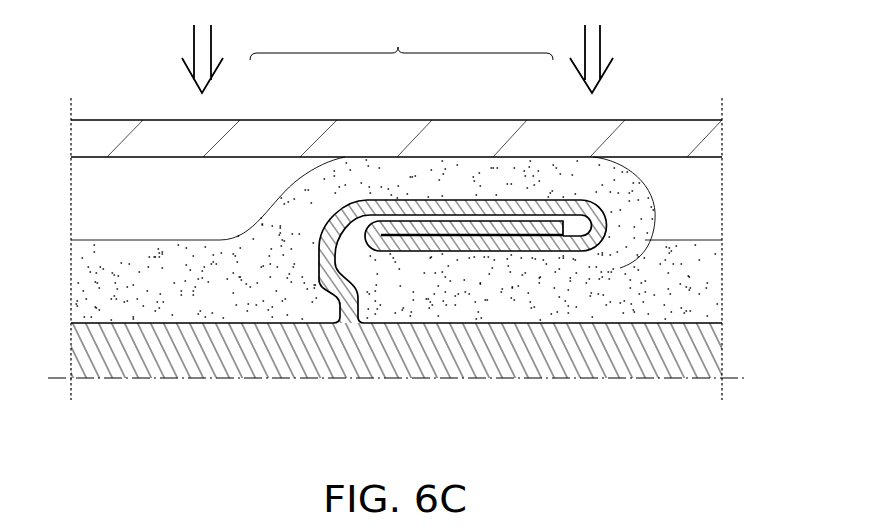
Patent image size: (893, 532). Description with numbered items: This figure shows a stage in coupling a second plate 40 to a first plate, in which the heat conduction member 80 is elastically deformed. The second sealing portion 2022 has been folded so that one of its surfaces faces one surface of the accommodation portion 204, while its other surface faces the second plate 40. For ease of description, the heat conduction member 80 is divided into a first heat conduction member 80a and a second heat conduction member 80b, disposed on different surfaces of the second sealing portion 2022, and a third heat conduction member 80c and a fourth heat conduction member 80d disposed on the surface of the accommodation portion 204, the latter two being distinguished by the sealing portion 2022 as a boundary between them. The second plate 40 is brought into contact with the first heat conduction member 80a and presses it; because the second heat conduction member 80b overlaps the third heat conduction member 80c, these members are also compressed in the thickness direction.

The second plate 40 is at (107, 130).
The heat conduction member 80 is at (396, 131).
The first heat conduction member 80a is at (423, 183).
The second heat conduction member 80b is at (478, 272).
The third heat conduction member 80c is at (530, 303).
The fourth heat conduction member 80d is at (193, 265).
The accommodation portion 204 is at (245, 350).
The second sealing portion 2022 is at (410, 247).